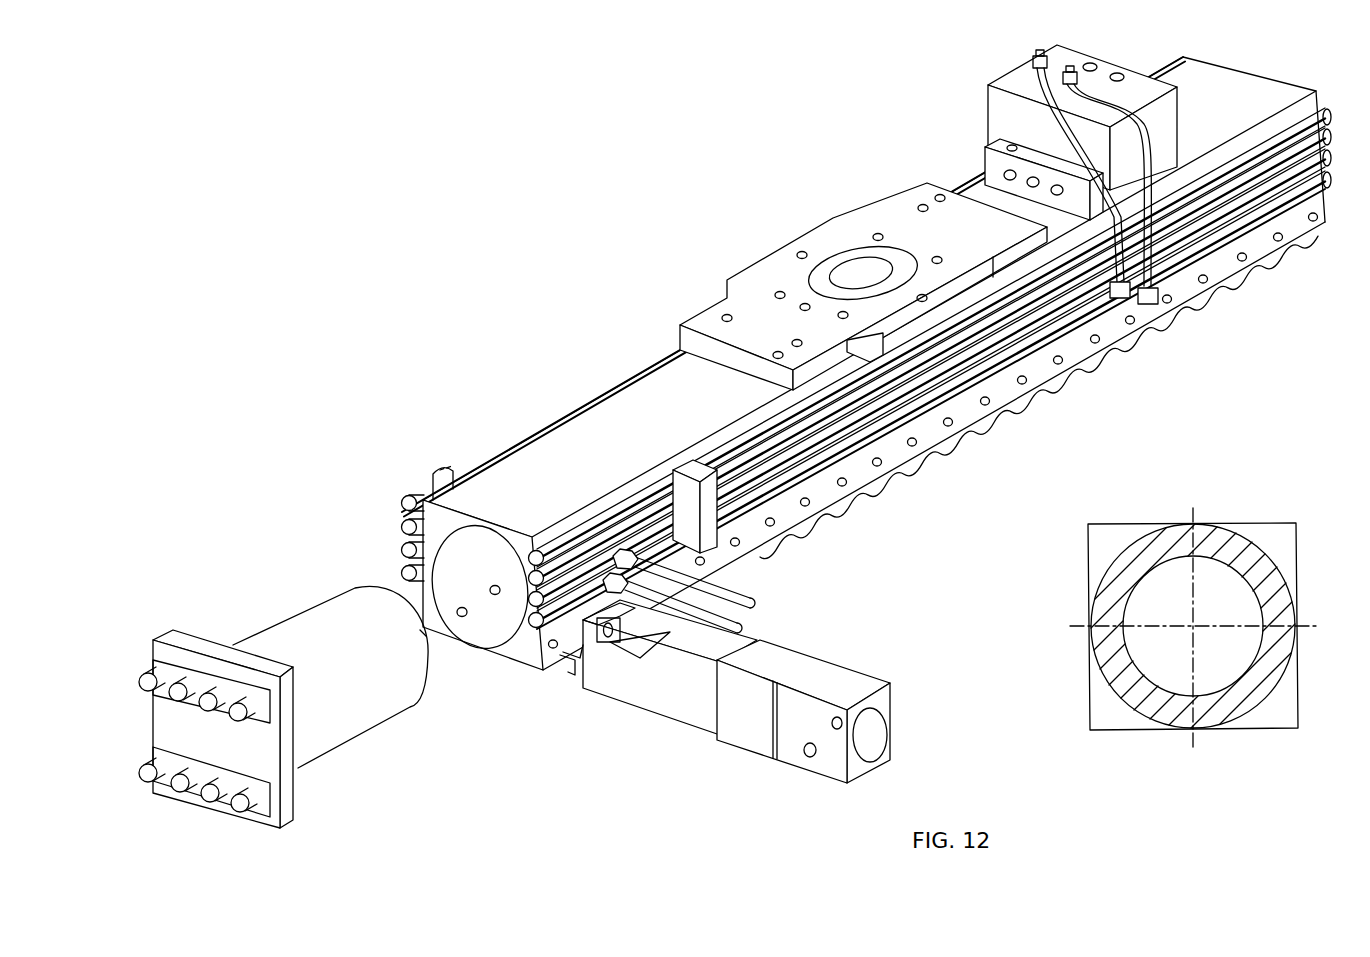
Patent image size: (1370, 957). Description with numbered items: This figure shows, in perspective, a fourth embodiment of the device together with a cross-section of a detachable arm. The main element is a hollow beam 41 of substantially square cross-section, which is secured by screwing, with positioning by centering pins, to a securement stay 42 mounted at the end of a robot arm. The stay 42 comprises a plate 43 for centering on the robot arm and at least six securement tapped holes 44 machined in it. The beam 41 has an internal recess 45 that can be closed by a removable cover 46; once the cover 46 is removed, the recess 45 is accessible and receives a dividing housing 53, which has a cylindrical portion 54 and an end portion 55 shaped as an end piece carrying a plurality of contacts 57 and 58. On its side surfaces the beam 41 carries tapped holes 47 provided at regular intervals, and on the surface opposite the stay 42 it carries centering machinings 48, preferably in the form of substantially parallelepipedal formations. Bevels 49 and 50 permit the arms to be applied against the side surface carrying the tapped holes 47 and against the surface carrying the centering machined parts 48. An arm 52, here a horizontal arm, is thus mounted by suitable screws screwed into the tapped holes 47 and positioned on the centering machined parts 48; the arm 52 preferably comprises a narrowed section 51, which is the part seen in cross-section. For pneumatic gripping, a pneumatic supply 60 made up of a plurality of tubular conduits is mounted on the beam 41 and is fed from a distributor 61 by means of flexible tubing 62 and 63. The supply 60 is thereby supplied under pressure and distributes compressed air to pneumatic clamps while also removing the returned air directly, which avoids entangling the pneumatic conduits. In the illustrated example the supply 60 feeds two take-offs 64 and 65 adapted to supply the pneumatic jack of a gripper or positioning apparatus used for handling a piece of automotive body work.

The hollow beam 41 is at (630, 360).
The securement stay 42 is at (795, 232).
The plate 43 is at (827, 292).
The securement tapped holes 44 is at (937, 258).
The internal recess 45 is at (467, 553).
The removable cover 46 is at (503, 642).
The tapped holes 47 is at (1022, 383).
The centering machinings 48 is at (853, 507).
The bevel 49 is at (568, 672).
The bevel 50 is at (425, 634).
The narrowed section 51 is at (714, 664).
The arm 52 is at (685, 715).
The dividing housing 53 is at (357, 747).
The cylindrical portion 54 is at (377, 682).
The end portion 55 is at (290, 790).
The contacts 57 is at (243, 812).
The contacts 58 is at (235, 703).
The pneumatic supply 60 is at (575, 510).
The distributor 61 is at (983, 91).
The flexible tubing 62 is at (1066, 90).
The flexible tubing 63 is at (985, 147).
The take-off 64 is at (603, 617).
The take-off 65 is at (643, 597).